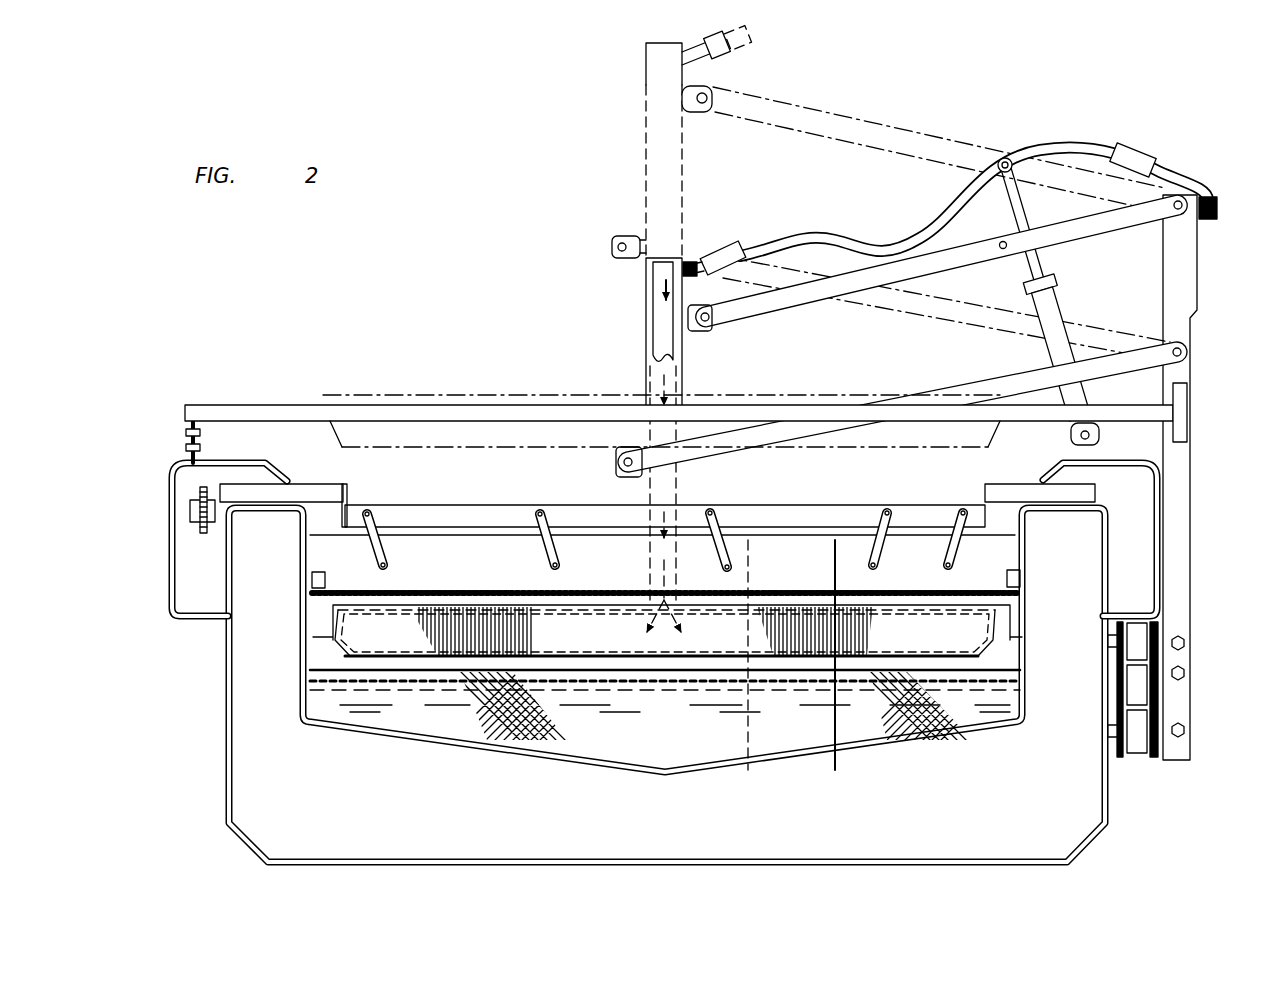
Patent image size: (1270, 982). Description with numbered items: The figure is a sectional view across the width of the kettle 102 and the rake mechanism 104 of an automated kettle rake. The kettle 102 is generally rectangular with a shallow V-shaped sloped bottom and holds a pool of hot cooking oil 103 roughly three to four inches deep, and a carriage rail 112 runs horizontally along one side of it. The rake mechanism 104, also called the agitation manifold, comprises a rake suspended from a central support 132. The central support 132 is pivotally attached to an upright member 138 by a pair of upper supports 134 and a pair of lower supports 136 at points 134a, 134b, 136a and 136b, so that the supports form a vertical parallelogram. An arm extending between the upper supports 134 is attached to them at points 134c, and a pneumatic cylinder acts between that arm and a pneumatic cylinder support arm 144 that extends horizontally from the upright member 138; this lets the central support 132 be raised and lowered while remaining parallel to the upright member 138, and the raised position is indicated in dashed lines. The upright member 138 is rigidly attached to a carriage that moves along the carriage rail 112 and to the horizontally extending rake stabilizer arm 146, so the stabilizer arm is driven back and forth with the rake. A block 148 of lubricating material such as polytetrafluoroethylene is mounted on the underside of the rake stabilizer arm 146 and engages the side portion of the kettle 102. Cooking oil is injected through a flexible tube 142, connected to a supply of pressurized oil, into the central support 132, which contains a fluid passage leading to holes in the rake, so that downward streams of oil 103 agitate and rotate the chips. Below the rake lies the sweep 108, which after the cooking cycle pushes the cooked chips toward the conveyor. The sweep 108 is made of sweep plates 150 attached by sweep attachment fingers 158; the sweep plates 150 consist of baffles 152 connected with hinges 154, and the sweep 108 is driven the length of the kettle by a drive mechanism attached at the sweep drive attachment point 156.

The kettle 102 is at (228, 774).
The cooking oil 103 is at (682, 731).
The rake mechanism 104 is at (546, 232).
The sweep 108 is at (480, 503).
The carriage rail 112 is at (1123, 680).
The central support 132 is at (645, 338).
The upper supports 134 is at (1100, 230).
The pivot point 134a is at (1178, 200).
The pivot point 134b is at (708, 326).
The attachment points 134c is at (1003, 250).
The lower supports 136 is at (950, 387).
The pivot point 136a is at (1192, 352).
The pivot point 136b is at (617, 462).
The upright member 138 is at (1197, 287).
The flexible tube 142 is at (797, 250).
The pneumatic cylinder support arm 144 is at (1117, 438).
The rake stabilizer arm 146 is at (250, 404).
The block 148 is at (185, 455).
The sweep plates 150 is at (923, 512).
The baffles 152 is at (1012, 602).
The hinges 154 is at (970, 590).
The sweep drive attachment point 156 is at (190, 512).
The sweep attachment fingers 158 is at (724, 512).